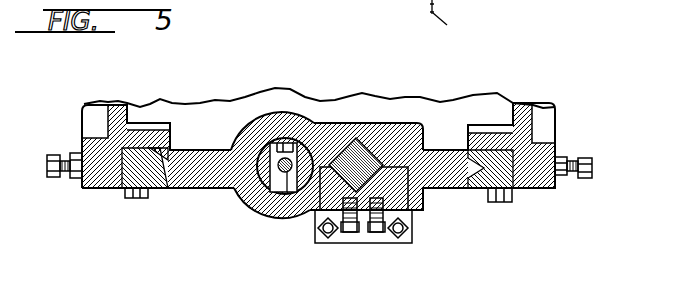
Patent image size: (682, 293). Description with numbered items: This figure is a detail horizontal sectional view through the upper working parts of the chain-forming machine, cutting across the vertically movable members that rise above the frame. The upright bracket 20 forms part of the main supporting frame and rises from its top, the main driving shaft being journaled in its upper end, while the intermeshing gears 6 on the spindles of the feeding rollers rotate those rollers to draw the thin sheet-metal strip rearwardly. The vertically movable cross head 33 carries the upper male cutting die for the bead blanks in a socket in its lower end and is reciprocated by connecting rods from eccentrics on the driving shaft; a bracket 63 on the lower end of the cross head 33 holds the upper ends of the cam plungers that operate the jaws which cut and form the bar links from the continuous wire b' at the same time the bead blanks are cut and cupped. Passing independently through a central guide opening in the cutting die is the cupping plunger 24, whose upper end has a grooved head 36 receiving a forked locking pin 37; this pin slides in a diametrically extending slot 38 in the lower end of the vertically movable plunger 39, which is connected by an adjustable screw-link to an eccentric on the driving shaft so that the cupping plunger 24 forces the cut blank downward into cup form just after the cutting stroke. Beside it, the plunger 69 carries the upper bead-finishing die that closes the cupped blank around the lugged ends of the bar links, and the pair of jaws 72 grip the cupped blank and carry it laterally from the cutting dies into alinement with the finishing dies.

The bracket 20 is at (83, 138).
The cross head 33 is at (225, 148).
The grooved head 36 is at (288, 144).
The plunger 39 is at (322, 122).
The plunger 69 is at (368, 142).
The slot 38 is at (238, 195).
The forked locking pin 37 is at (283, 186).
The cupping plunger 24 is at (288, 173).
The bracket 63 is at (360, 236).
The jaws 72 is at (447, 8).
The intermeshing gears 6 is at (433, 30).
The continuous wire b is at (460, 32).